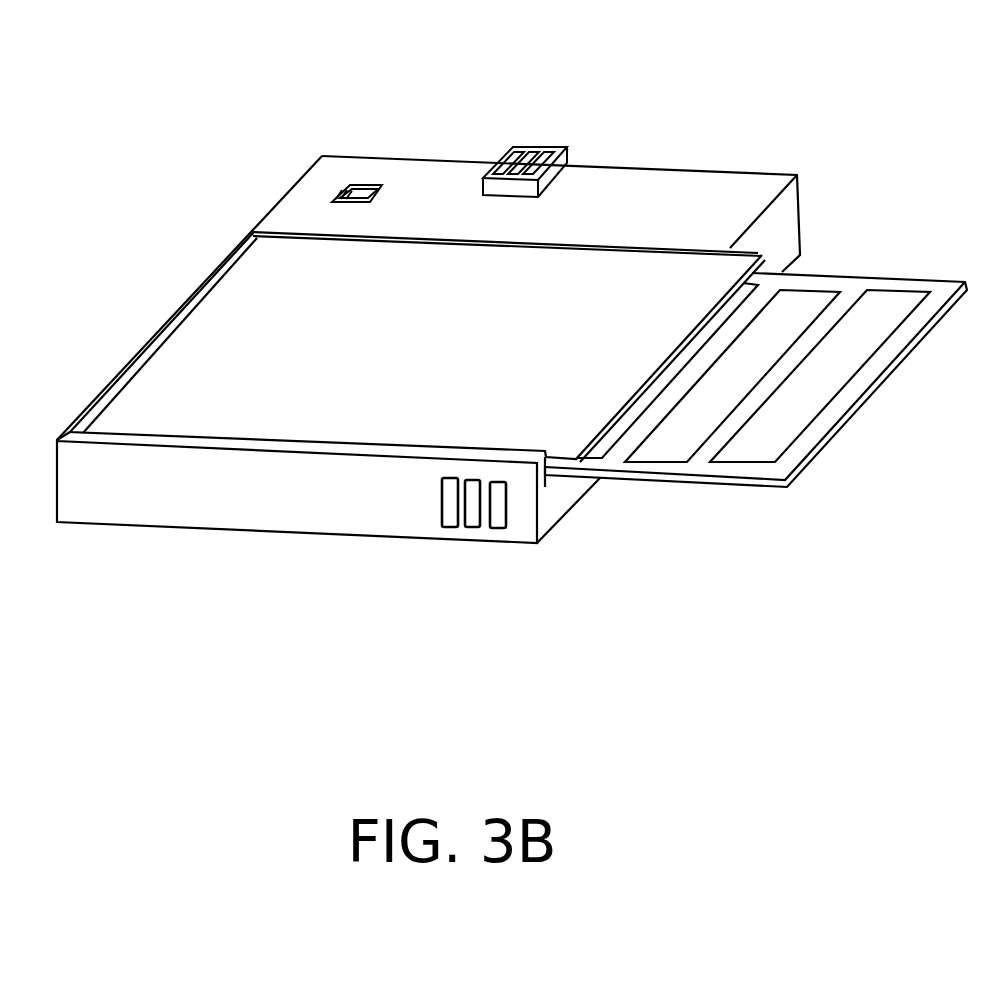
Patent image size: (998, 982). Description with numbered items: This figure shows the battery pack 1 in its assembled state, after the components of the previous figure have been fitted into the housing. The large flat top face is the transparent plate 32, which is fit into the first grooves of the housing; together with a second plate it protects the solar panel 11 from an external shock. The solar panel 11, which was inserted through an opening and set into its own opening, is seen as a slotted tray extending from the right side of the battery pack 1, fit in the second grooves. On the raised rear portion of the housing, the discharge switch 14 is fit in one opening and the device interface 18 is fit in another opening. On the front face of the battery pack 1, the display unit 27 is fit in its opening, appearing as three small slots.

The battery pack 1 is at (655, 122).
The solar panel 11 is at (852, 290).
The discharge switch 14 is at (362, 194).
The device interface 18 is at (510, 148).
The display unit 27 is at (445, 497).
The transparent plate 32 is at (222, 316).